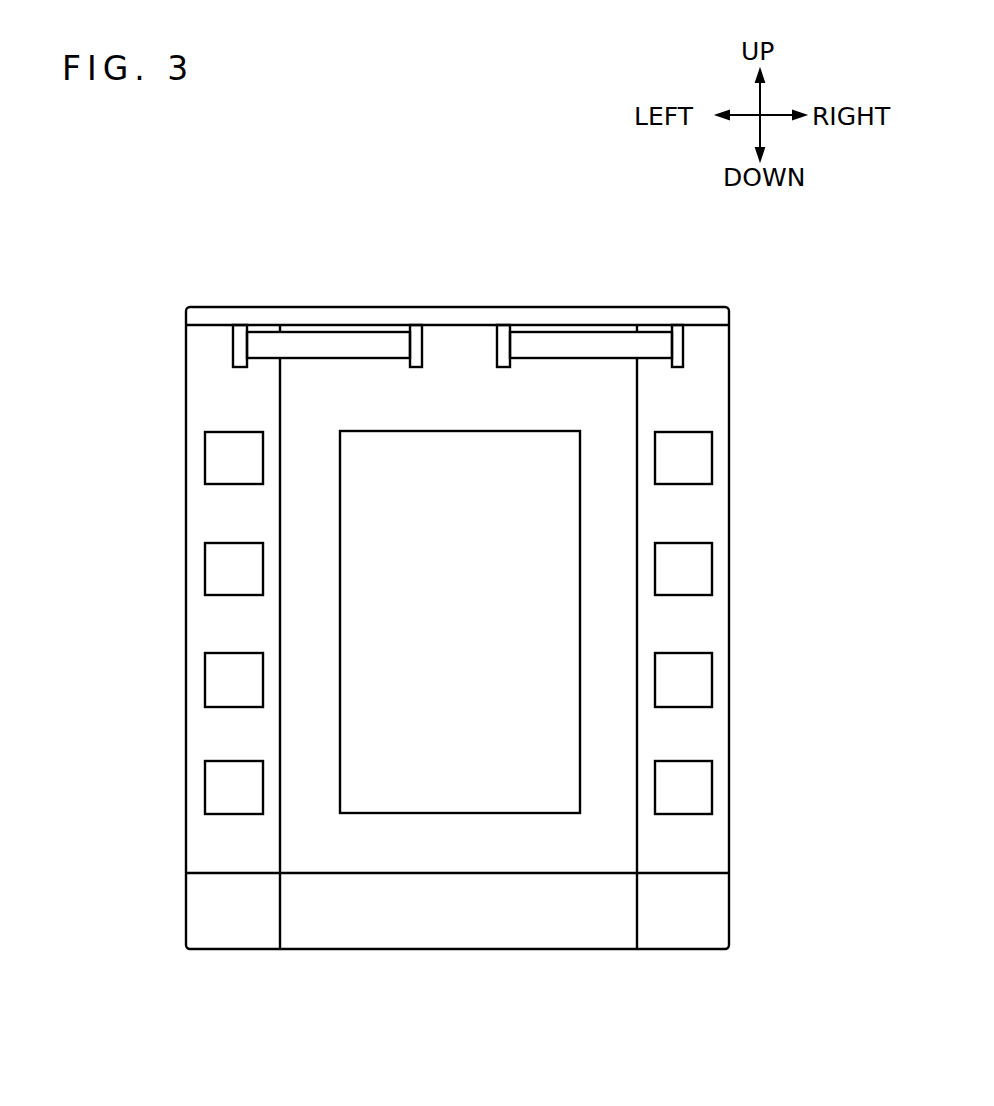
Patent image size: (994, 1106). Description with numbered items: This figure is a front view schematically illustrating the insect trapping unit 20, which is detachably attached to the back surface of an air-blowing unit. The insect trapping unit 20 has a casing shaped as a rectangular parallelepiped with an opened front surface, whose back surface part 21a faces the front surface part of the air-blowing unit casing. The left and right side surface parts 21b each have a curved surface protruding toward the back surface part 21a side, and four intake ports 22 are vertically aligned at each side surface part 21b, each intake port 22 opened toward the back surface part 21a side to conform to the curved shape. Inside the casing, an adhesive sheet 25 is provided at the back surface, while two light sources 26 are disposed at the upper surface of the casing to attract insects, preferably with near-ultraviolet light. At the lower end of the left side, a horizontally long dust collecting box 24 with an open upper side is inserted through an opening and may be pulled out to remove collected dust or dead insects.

The insect trapping unit 20 is at (684, 294).
The back surface part 21a is at (455, 342).
The side surface part 21b is at (214, 388).
The intake port 22 is at (208, 472).
The dust collecting box 24 is at (362, 928).
The adhesive sheet 25 is at (457, 795).
The light source 26 is at (350, 342).